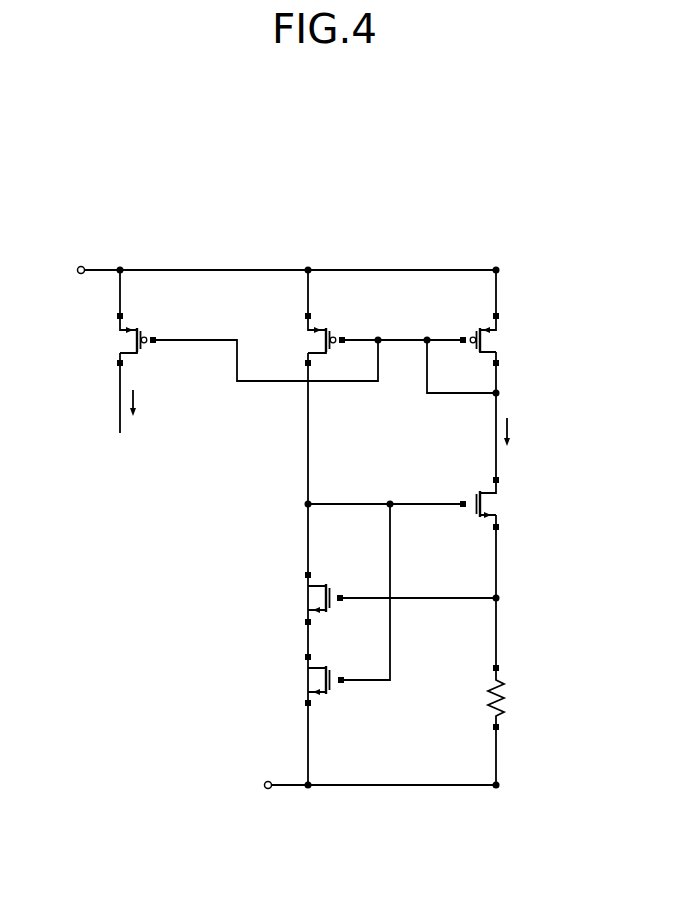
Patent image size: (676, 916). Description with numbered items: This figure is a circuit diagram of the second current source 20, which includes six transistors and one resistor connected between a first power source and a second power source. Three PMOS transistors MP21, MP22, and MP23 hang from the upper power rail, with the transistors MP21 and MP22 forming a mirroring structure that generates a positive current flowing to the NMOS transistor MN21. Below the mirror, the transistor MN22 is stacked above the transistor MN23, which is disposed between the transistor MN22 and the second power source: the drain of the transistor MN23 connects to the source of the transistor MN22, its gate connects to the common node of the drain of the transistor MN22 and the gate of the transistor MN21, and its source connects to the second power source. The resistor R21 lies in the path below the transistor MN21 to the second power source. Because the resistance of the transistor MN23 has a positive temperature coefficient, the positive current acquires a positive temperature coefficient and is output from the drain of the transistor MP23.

The second current source 20 is at (527, 255).
The PMOS transistor MP21 is at (491, 375).
The PMOS transistor MP22 is at (360, 527).
The PMOS transistor MP23 is at (224, 351).
The NMOS transistor MN21 is at (429, 578).
The NMOS transistor MN22 is at (377, 598).
The NMOS transistor MN23 is at (299, 680).
The resistor R21 is at (517, 725).